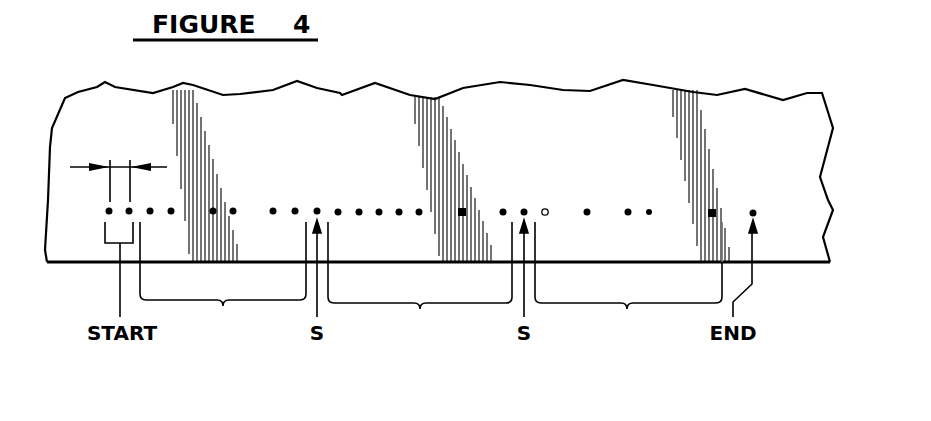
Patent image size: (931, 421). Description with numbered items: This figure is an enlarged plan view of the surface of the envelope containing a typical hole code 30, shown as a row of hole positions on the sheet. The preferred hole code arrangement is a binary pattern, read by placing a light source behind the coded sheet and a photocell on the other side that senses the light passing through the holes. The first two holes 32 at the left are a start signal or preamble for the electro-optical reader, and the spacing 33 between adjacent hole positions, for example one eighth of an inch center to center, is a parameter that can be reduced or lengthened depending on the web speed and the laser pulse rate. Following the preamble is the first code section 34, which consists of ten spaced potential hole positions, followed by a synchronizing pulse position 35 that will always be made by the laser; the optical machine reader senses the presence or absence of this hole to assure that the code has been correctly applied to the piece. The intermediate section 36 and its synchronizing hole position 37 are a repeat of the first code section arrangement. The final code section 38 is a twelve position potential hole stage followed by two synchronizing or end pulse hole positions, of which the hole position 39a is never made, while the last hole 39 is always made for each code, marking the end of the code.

The record medium strip with data marks 30 is at (268, 202).
The first two holes 32 is at (106, 212).
The mark spacing 33 is at (120, 167).
The first code section 34 is at (223, 282).
The synchronizing pulse position 35 is at (317, 207).
The intermediate section 36 is at (420, 282).
The synchronizing hole position 37 is at (524, 208).
The final code section 38 is at (628, 282).
The hole position 39a is at (731, 213).
The last hole 39 is at (757, 212).